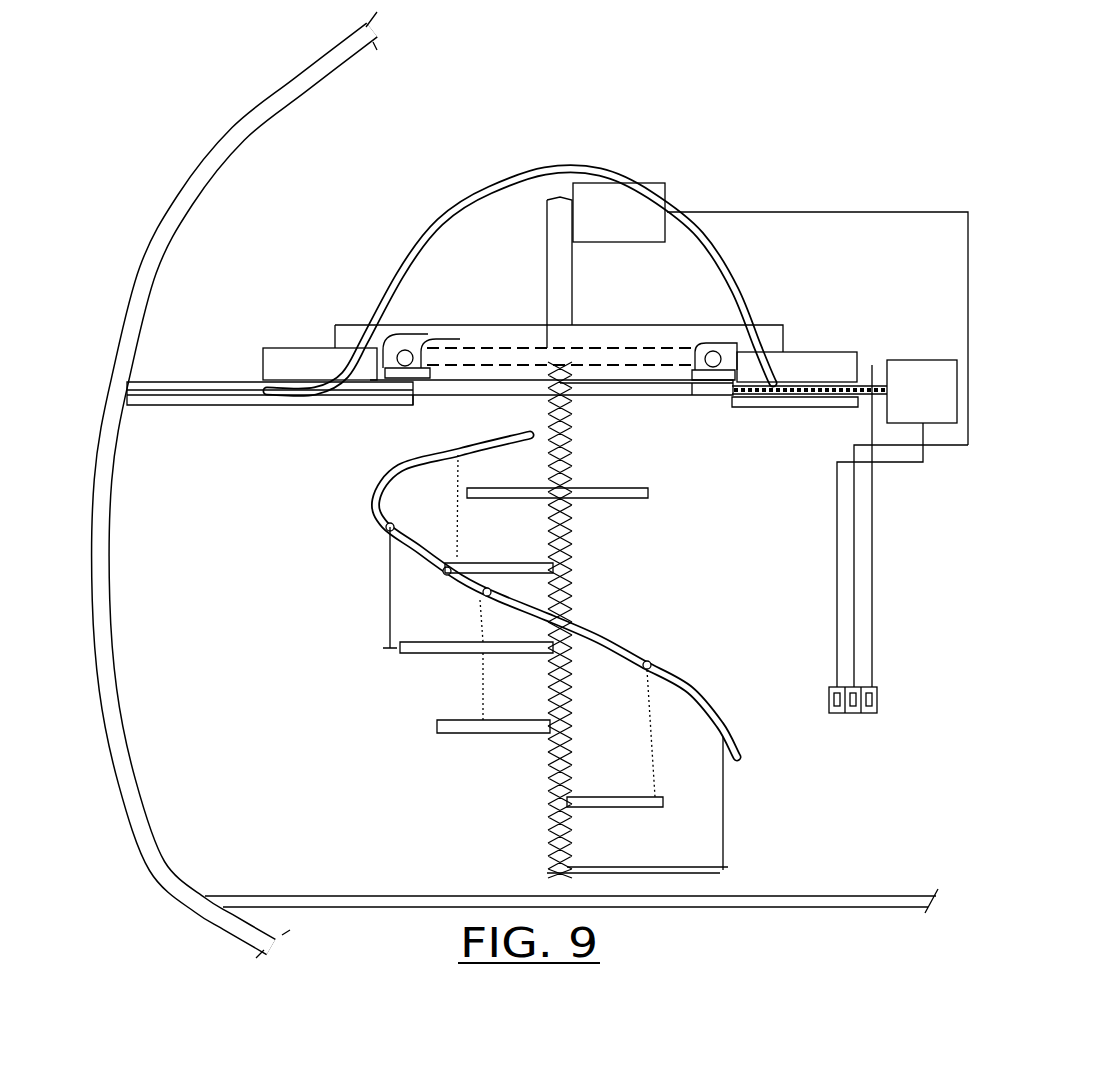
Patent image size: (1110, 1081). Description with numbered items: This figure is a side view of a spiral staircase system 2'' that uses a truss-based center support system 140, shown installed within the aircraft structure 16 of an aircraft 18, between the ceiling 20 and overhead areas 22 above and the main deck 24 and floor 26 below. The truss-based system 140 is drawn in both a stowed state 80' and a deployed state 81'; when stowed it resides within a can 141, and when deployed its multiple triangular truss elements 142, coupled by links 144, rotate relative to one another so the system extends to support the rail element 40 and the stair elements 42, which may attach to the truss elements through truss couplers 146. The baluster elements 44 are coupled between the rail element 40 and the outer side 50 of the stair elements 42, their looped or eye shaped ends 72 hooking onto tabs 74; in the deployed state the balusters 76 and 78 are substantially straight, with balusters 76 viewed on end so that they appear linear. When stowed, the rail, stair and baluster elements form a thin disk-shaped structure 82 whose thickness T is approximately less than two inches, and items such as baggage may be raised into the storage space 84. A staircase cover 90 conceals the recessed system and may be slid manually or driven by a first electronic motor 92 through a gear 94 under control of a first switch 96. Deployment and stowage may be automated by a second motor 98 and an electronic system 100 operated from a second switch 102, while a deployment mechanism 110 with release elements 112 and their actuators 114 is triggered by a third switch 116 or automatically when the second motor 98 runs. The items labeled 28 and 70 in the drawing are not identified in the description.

The staircase system 2'' is at (806, 150).
The aircraft structure 16 is at (100, 672).
The aircraft 18 is at (93, 567).
The ceiling 20 is at (190, 408).
The overhead areas 22 is at (250, 368).
The main deck 24 is at (180, 805).
The floor 26 is at (320, 912).
The guide 28 is at (413, 278).
The rail element 40 is at (437, 348).
The stair elements 42 is at (626, 398).
The baluster elements 44 is at (722, 772).
The outer side 50 is at (385, 655).
The carrier plate 70 is at (653, 396).
The looped or eye shaped ends 72 is at (722, 738).
The tabs 74 is at (383, 648).
The balusters 76 is at (392, 568).
The balusters 78 is at (483, 683).
The stowed state 80' is at (559, 314).
The deployed state 81' is at (712, 529).
The disk-shaped structure 82 is at (703, 300).
The storage space 84 is at (476, 380).
The staircase cover 90 is at (717, 398).
The first electronic motor 92 is at (938, 360).
The gear 94 is at (872, 365).
The first switch 96 is at (838, 716).
The second motor 98 is at (695, 178).
The electronic system 100 is at (950, 470).
The second switch 102 is at (858, 716).
The deployment mechanism 110 is at (462, 341).
The release elements 112 is at (383, 347).
The actuators 114 is at (285, 348).
The third switch 116 is at (880, 700).
The truss-based center support system 140 is at (573, 683).
The can 141 is at (575, 272).
The triangular truss elements 142 is at (575, 588).
The links 144 is at (577, 528).
The truss couplers 146 is at (565, 810).
The thickness T is at (672, 383).